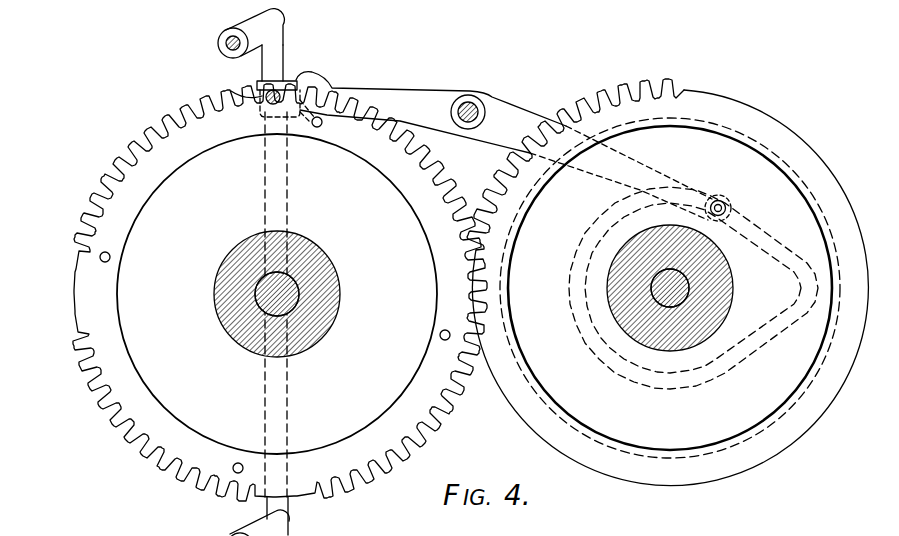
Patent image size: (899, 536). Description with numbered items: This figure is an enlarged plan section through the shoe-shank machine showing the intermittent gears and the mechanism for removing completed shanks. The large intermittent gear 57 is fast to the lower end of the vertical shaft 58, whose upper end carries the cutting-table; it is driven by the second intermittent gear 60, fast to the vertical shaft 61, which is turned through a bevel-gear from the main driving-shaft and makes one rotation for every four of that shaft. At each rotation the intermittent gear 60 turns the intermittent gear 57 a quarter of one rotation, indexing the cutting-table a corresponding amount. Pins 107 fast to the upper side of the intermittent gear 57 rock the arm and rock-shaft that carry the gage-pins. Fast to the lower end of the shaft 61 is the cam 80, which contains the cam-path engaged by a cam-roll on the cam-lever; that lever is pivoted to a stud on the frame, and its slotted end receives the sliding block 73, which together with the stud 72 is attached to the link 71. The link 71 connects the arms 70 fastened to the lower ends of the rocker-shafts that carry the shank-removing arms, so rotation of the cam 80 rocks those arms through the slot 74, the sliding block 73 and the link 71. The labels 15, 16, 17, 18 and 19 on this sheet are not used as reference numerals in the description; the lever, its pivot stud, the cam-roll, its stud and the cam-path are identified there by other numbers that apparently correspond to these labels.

The lever arm 15 is at (438, 100).
The pivot pin 16 is at (476, 107).
The link 17 is at (726, 205).
The pin 18 is at (726, 208).
The cam slot 19 is at (768, 343).
The intermittent gear 57 is at (280, 292).
The vertical shaft 58 is at (290, 292).
The intermittent gear 60 is at (575, 239).
The vertical shaft 61 is at (672, 288).
The arm 70 is at (253, 27).
The link 71 is at (285, 59).
The stud 72 is at (298, 86).
The sliding block 73 is at (258, 88).
The slot 74 is at (231, 92).
The cam 80 is at (748, 439).
The pins 107 is at (111, 257).